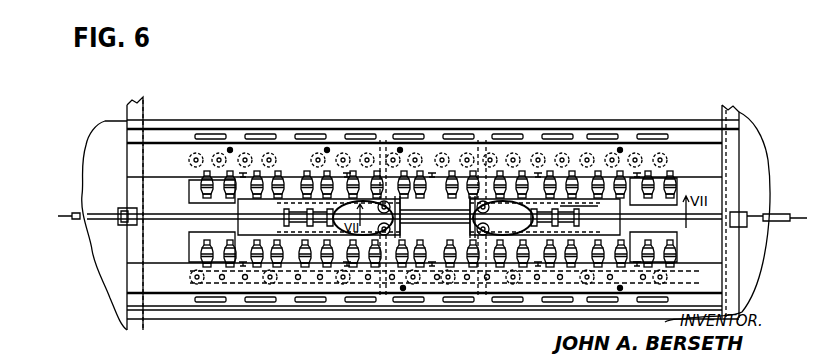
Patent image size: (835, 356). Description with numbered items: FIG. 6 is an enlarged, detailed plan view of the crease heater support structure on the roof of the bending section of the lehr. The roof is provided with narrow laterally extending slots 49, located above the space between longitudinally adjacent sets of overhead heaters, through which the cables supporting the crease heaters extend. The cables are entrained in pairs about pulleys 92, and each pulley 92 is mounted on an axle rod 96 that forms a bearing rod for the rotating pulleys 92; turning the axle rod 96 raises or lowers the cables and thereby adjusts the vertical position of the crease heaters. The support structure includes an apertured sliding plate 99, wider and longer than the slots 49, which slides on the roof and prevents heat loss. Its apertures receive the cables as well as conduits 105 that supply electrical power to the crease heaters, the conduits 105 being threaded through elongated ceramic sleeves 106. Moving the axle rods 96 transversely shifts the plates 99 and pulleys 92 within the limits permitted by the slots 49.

The slots 49 is at (282, 229).
The pulley 92 is at (591, 207).
The axle rod 96 is at (101, 221).
The apertured sliding plate 99 is at (200, 226).
The conduits 105 is at (507, 200).
The ceramic sleeves 106 is at (474, 204).